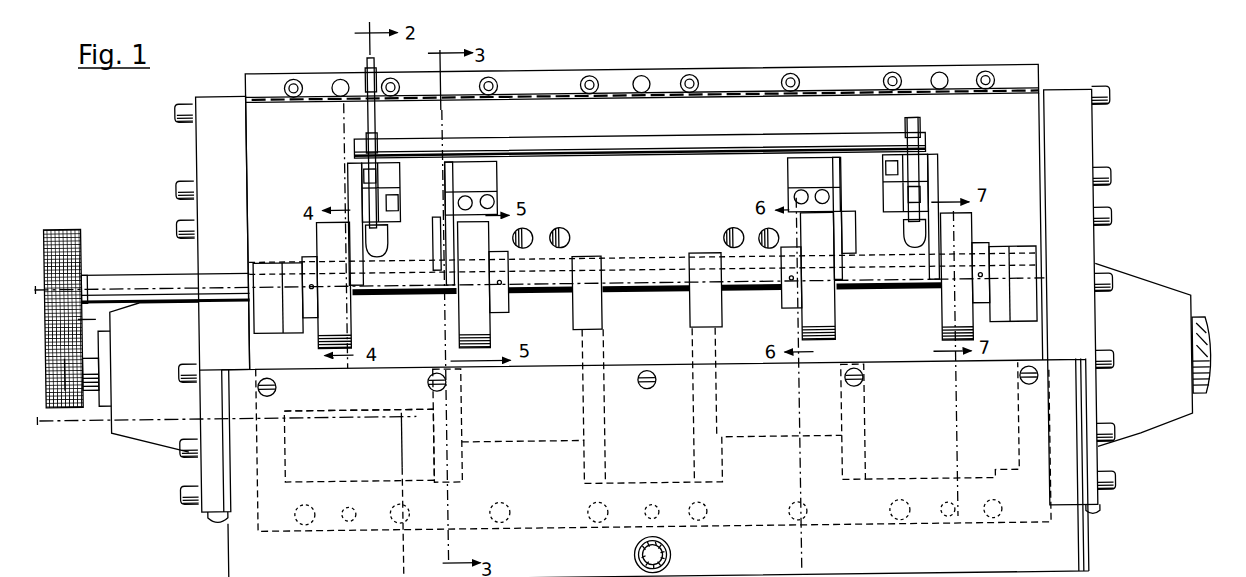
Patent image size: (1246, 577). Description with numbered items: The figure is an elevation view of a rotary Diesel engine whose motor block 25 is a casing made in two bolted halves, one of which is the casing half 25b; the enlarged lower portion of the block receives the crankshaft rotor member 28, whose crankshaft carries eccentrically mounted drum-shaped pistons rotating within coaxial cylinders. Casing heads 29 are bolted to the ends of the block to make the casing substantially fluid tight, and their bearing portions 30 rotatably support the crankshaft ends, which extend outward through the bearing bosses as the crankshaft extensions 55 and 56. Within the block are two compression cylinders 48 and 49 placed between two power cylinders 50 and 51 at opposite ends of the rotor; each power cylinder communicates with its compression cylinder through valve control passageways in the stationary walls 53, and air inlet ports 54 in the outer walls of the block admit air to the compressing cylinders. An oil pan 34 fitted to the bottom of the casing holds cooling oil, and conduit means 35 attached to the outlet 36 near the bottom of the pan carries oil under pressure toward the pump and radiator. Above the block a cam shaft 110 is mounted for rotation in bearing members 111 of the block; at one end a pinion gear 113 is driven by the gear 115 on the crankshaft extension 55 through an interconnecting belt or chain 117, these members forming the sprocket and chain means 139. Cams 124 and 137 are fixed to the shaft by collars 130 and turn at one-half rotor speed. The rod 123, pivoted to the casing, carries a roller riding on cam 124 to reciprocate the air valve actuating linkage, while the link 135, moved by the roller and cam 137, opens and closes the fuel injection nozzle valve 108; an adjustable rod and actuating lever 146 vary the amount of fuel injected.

The motor block 25 is at (881, 68).
The casing half 25b is at (1006, 130).
The crankshaft rotor member 28 is at (376, 401).
The casing heads 29 is at (198, 176).
The bearing portions 30 is at (158, 438).
The oil pan 34 is at (232, 546).
The conduit means 35 is at (669, 552).
The outlet 36 is at (637, 550).
The compression cylinder 48 is at (517, 470).
The compression cylinder 49 is at (782, 466).
The power cylinder 50 is at (361, 471).
The power cylinder 51 is at (936, 467).
The stationary walls 53 is at (455, 428).
The air inlet ports 54 is at (573, 230).
The crankshaft extension 55 is at (90, 392).
The crankshaft extension 56 is at (1191, 366).
The nozzle valve 108 is at (386, 247).
The cam shaft 110 is at (165, 274).
The bearing members 111 is at (266, 260).
The pinion gear 113 is at (82, 257).
The gear 115 is at (68, 382).
The belt or chain 117 is at (78, 316).
The rod 123 is at (447, 199).
The cam 124 is at (491, 328).
The collars 130 is at (309, 254).
The link 135 is at (350, 188).
The cam 137 is at (346, 326).
The sprocket and chain means 139 is at (78, 220).
The actuating linkage lever 146 is at (379, 61).